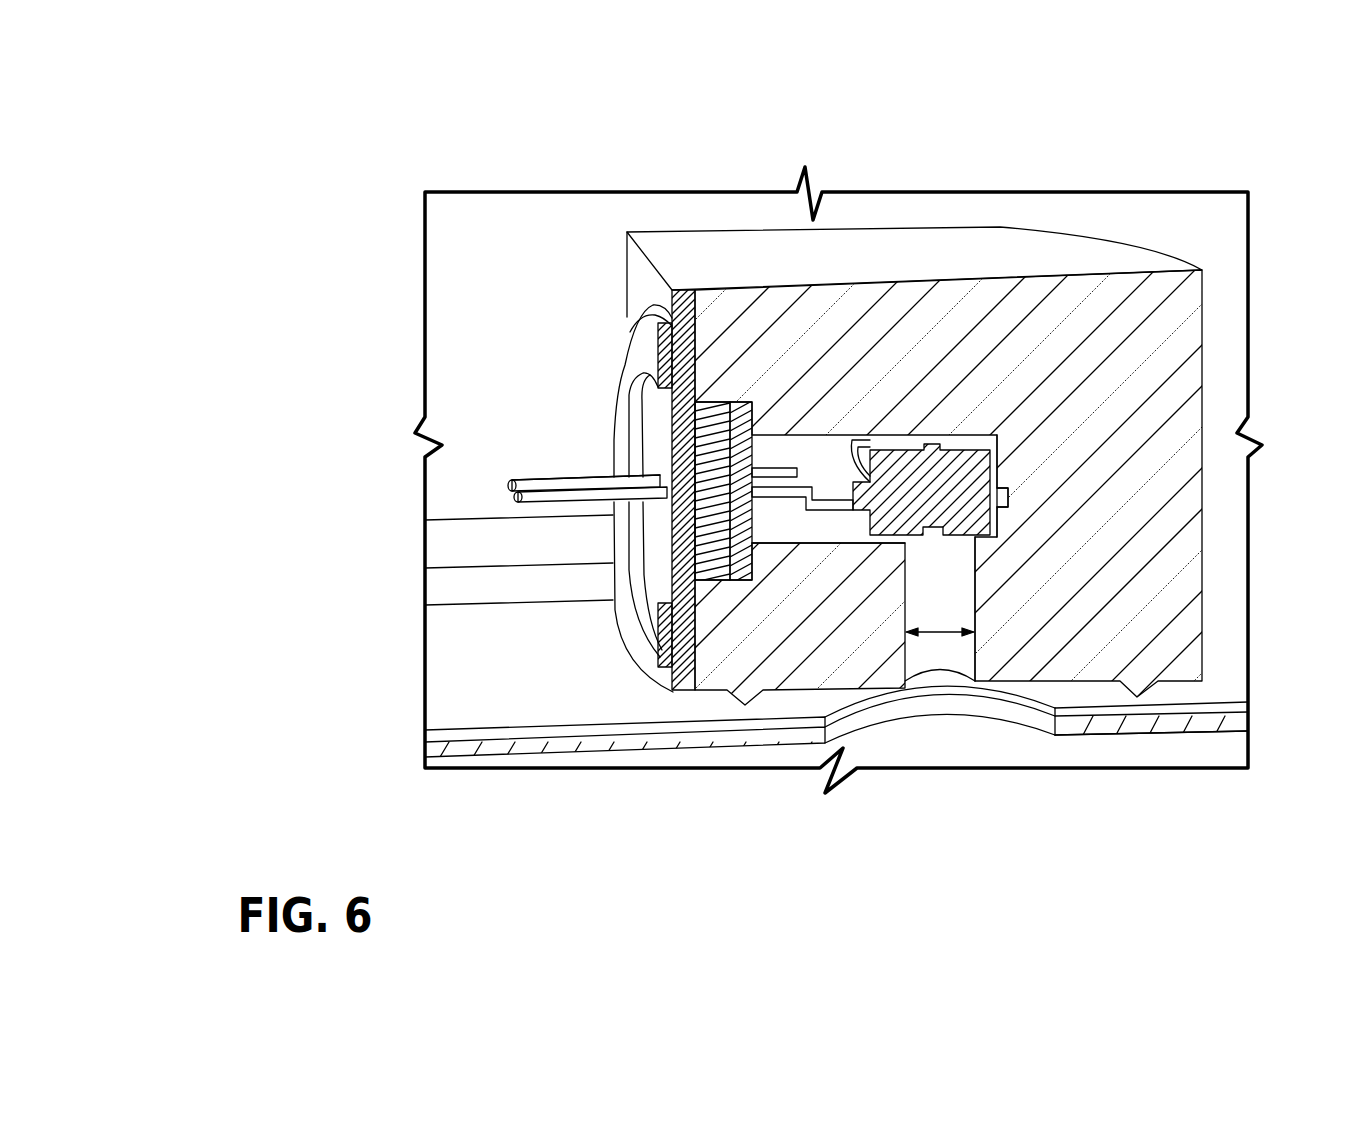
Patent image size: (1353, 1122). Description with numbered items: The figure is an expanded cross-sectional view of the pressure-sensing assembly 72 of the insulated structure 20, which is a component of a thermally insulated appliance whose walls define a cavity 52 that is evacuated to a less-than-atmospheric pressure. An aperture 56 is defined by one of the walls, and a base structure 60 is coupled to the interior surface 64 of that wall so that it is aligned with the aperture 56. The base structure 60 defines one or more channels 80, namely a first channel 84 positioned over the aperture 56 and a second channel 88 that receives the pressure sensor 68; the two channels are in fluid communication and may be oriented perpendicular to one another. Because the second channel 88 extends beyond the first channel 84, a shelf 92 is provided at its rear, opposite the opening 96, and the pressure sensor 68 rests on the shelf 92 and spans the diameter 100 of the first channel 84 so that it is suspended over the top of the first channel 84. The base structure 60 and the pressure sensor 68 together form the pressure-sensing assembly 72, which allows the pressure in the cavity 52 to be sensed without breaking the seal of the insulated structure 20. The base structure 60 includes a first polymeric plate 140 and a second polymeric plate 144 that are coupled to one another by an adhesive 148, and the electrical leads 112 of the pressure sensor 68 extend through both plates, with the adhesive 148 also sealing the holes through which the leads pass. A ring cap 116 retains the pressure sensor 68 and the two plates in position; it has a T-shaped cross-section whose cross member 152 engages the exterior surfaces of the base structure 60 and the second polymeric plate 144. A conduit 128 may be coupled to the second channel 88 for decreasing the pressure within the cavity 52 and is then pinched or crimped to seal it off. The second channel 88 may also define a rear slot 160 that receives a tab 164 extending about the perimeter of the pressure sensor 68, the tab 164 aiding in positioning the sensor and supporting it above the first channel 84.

The insulated structure 20 is at (1154, 152).
The cavity 52 is at (1153, 747).
The aperture 56 is at (847, 720).
The base structure 60 is at (1218, 317).
The interior surface 64 is at (625, 697).
The pressure sensor 68 is at (956, 455).
The pressure-sensing assembly 72 is at (901, 259).
The channels 80 is at (990, 586).
The first channel 84 is at (968, 660).
The second channel 88 is at (921, 438).
The shelf 92 is at (1010, 498).
The opening 96 is at (753, 528).
The diameter 100 is at (941, 633).
The electrical leads 112 is at (501, 498).
The ring cap 116 is at (630, 365).
The conduit 128 is at (560, 490).
The first polymeric plate 140 is at (737, 413).
The second polymeric plate 144 is at (682, 380).
The adhesive 148 is at (720, 417).
The cross member 152 is at (619, 390).
The rear slot 160 is at (1010, 497).
The tab 164 is at (822, 470).